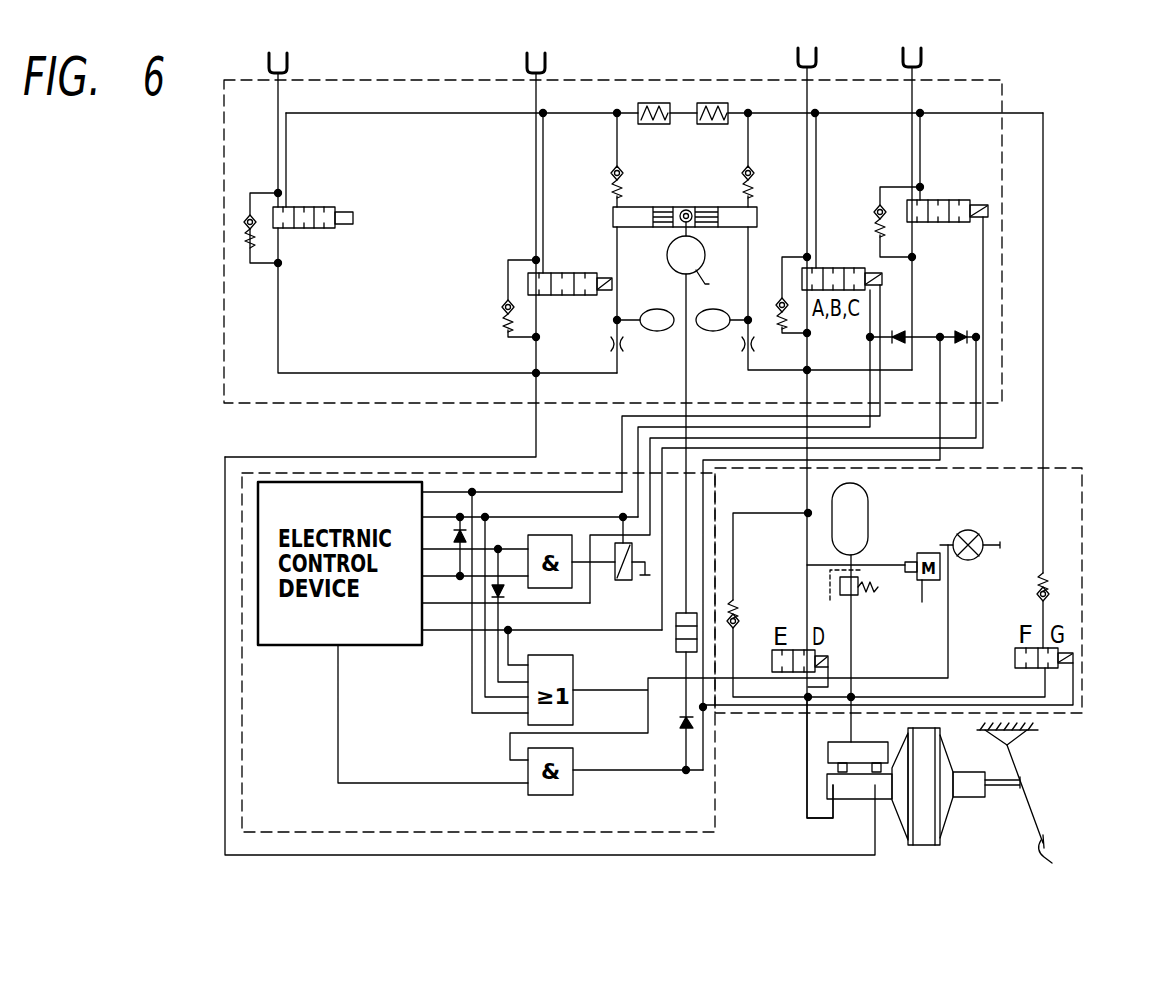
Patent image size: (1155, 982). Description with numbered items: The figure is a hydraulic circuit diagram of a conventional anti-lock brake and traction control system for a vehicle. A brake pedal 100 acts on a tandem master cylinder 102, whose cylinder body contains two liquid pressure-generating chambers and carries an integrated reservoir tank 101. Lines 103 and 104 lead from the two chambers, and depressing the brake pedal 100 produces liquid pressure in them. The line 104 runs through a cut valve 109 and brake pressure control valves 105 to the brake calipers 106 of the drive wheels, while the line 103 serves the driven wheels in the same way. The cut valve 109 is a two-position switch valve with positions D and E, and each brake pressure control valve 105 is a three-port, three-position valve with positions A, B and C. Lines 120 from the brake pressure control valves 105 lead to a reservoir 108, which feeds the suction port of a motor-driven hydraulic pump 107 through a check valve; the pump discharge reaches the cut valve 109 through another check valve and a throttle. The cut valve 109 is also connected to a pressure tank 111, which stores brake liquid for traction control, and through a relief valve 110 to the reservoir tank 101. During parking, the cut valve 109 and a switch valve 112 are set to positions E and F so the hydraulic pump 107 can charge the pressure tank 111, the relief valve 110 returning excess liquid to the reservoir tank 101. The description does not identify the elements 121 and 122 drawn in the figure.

The brake pedal 100 is at (1034, 793).
The reservoir tank 101 is at (865, 742).
The tandem master cylinder 102 is at (859, 813).
The line 103 is at (550, 656).
The line 104 is at (792, 757).
The brake pressure control valve 105 is at (899, 217).
The brake caliper 106 is at (885, 47).
The hydraulic pump 107 is at (661, 233).
The reservoir 108 is at (688, 75).
The cut valve 109 is at (777, 632).
The relief valve 110 is at (864, 608).
The pressure tank 111 is at (882, 519).
The switch valve 112 is at (1072, 650).
The lines 120 is at (900, 190).
The pressure supply unit 121 is at (898, 590).
The hydraulic line 122 is at (1073, 380).